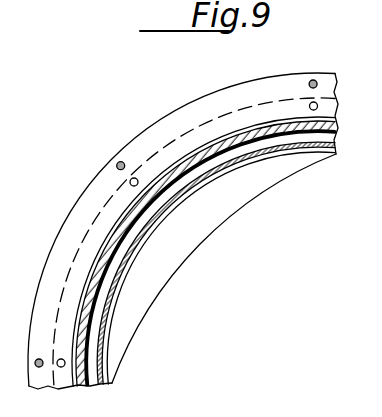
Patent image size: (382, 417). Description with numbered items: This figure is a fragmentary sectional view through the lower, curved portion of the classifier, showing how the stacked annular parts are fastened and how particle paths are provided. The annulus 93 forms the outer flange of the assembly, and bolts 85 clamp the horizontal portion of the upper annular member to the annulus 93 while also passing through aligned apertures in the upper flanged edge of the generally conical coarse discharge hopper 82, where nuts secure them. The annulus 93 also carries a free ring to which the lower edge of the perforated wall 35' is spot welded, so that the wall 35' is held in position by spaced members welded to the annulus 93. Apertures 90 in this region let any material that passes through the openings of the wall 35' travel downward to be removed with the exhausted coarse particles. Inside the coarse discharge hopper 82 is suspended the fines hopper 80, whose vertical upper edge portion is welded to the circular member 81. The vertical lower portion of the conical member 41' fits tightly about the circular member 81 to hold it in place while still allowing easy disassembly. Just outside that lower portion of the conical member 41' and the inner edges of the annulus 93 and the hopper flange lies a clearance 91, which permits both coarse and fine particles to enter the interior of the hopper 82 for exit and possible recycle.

The fines hopper 80 is at (230, 193).
The circular member 81 is at (100, 365).
The coarse discharge hopper 82 is at (246, 106).
The bolts 85 is at (119, 161).
The apertures 90 is at (130, 183).
The clearance 91 is at (135, 237).
The annulus 93 is at (67, 235).
The perforated wall 35' is at (205, 253).
The conical member 41' is at (217, 265).